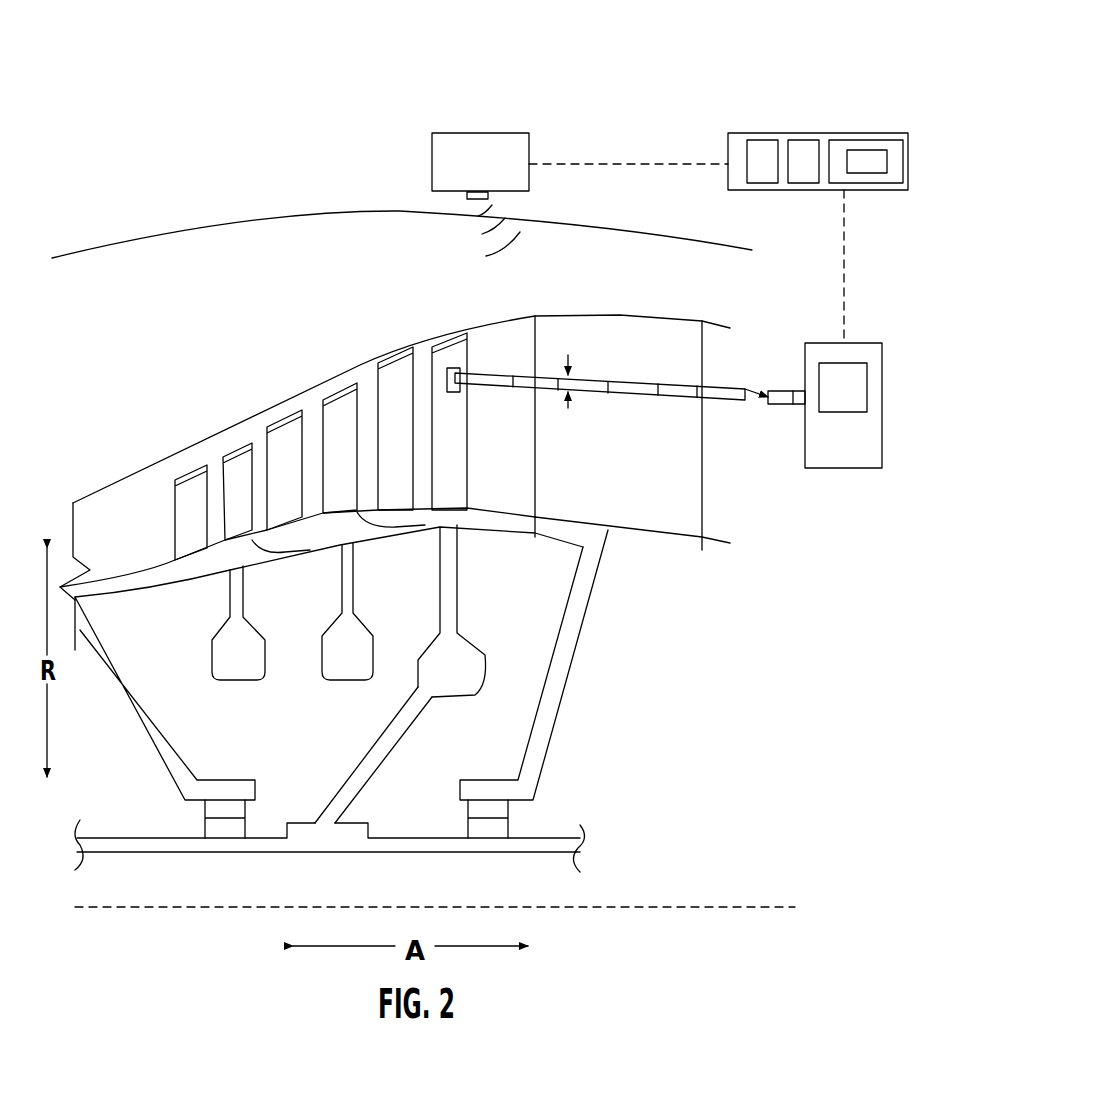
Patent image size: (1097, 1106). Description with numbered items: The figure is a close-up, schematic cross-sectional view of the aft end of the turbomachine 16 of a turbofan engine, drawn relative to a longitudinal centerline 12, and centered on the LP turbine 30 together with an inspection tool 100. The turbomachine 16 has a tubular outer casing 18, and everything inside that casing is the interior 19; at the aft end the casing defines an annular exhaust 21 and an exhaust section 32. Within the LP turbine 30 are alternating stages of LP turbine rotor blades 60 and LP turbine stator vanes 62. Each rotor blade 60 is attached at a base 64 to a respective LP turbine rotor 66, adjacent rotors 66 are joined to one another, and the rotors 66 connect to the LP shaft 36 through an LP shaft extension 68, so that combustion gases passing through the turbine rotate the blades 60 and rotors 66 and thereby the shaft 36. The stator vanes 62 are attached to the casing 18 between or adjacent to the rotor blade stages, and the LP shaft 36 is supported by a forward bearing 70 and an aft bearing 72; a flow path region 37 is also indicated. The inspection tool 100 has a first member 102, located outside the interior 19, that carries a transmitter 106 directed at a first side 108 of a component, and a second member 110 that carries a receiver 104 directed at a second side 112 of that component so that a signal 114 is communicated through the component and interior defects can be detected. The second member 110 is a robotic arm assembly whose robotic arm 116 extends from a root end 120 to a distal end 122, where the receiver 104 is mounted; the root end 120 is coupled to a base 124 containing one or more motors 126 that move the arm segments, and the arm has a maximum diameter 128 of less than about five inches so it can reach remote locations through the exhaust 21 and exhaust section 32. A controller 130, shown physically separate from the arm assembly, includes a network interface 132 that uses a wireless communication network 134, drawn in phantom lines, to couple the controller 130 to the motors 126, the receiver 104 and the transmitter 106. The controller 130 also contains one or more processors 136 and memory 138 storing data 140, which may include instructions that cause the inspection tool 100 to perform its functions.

The longitudinal centerline 12 is at (680, 907).
The turbomachine 16 is at (104, 208).
The tubular outer casing 18 is at (326, 212).
The interior 19 is at (254, 244).
The annular exhaust 21 is at (749, 481).
The low pressure turbine 30 is at (152, 330).
The exhaust section 32 is at (650, 364).
The LP shaft 36 is at (120, 838).
The flow path 37 is at (110, 519).
The LP turbine rotor blades 60 is at (237, 460).
The LP turbine stator vanes 62 is at (295, 427).
The base 64 is at (463, 531).
The LP turbine rotor 66 is at (240, 612).
The LP shaft extension 68 is at (390, 745).
The forward bearing 70 is at (257, 818).
The aft bearing 72 is at (505, 820).
The inspection tool 100 is at (720, 46).
The first member 102 is at (456, 146).
The receiver 104 is at (455, 395).
The transmitter 106 is at (466, 196).
The first side 108 is at (416, 462).
The second member 110 is at (882, 344).
The second side 112 is at (463, 440).
The signal 114 is at (515, 247).
The robotic arm 116 is at (622, 418).
The root end 120 is at (793, 385).
The distal end 122 is at (477, 346).
The base 124 is at (883, 440).
The motors 126 is at (862, 390).
The maximum diameter 128 is at (572, 362).
The controller 130 is at (835, 133).
The network interface 132 is at (762, 148).
The wireless communication network 134 is at (676, 162).
The processors 136 is at (803, 148).
The memory 138 is at (890, 140).
The data 140 is at (880, 160).